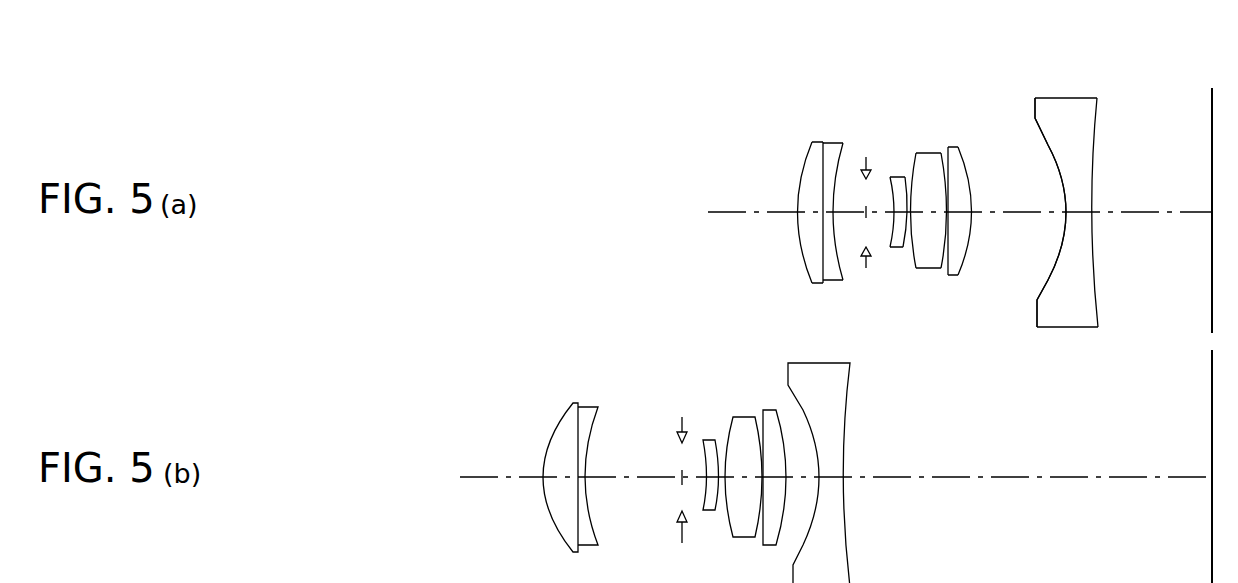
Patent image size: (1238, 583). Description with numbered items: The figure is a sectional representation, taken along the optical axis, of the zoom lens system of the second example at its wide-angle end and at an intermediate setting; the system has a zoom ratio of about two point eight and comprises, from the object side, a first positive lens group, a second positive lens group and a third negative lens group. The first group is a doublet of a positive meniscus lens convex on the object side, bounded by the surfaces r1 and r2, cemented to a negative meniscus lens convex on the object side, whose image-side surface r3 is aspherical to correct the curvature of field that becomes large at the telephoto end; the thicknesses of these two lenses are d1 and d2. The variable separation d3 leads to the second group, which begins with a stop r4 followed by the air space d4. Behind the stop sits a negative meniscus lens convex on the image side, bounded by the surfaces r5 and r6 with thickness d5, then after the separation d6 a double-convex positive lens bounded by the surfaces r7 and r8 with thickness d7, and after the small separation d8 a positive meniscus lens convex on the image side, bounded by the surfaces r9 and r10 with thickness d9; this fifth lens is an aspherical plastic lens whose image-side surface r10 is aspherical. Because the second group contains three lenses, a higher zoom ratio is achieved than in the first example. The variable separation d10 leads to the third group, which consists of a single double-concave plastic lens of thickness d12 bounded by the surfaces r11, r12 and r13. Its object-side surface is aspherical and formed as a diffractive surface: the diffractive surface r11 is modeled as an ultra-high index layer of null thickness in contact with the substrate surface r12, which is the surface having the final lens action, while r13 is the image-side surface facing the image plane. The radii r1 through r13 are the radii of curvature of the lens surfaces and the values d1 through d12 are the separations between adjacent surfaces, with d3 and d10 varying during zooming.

The lens surface r1 is at (803, 160).
The lens surface r2 is at (823, 150).
The lens surface r3 is at (845, 152).
The stop r4 is at (858, 168).
The lens surface r5 is at (890, 172).
The lens surface r6 is at (904, 176).
The lens surface r7 is at (913, 170).
The lens surface r8 is at (946, 165).
The lens surface r9 is at (953, 148).
The lens surface r10 is at (975, 162).
The diffractive surface r11 is at (1043, 139).
The lens surface r12 is at (1045, 201).
The lens surface r13 is at (1095, 130).
The lens surface separation d1 is at (807, 229).
The lens surface separation d2 is at (835, 278).
The lens surface separation d3 is at (847, 229).
The lens surface separation d4 is at (877, 229).
The lens surface separation d5 is at (868, 252).
The lens surface separation d6 is at (912, 277).
The lens surface separation d7 is at (932, 229).
The lens surface separation d8 is at (950, 268).
The lens surface separation d9 is at (960, 243).
The lens surface separation d10 is at (1020, 229).
The lens surface separation d12 is at (1077, 214).